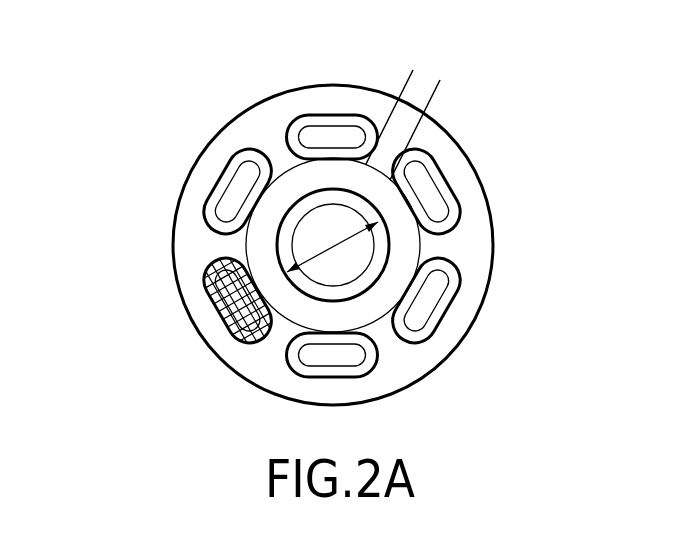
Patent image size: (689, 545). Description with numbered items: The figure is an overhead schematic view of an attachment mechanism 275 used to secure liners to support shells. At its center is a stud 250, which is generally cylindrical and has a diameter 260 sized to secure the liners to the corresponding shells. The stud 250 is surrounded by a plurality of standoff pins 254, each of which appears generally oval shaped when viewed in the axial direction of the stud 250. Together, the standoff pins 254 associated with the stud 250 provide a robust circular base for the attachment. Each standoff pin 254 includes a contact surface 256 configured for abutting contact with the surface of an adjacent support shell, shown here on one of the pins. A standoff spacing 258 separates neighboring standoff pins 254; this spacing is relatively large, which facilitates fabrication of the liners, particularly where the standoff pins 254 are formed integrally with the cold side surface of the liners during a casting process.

The attachment mechanism 275 is at (131, 96).
The stud 250 is at (377, 251).
The standoff pins 254 is at (438, 208).
The contact surface 256 is at (238, 298).
The standoff spacing 258 is at (462, 117).
The diameter 260 is at (293, 250).